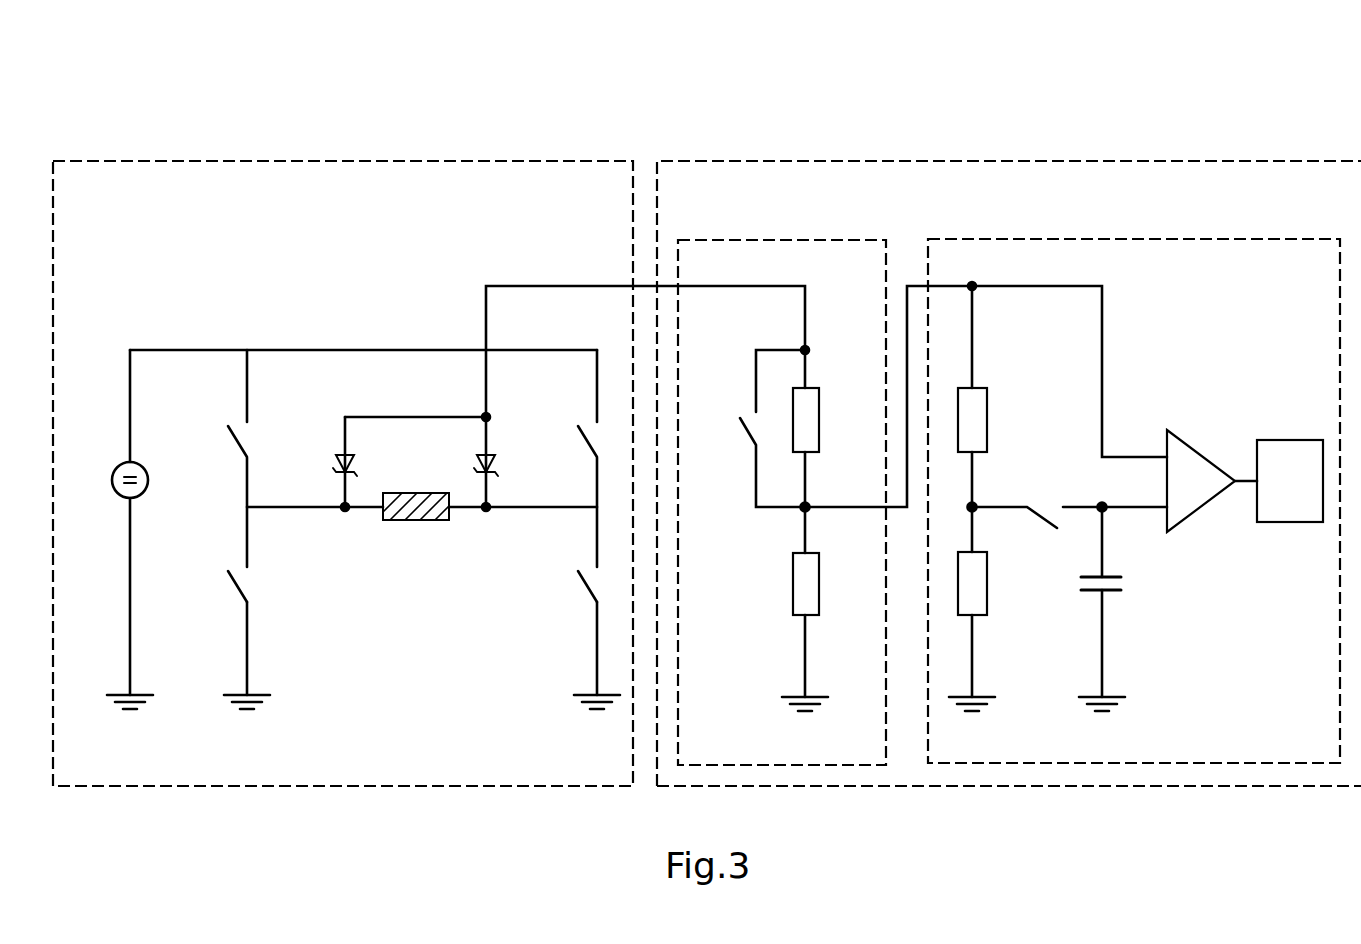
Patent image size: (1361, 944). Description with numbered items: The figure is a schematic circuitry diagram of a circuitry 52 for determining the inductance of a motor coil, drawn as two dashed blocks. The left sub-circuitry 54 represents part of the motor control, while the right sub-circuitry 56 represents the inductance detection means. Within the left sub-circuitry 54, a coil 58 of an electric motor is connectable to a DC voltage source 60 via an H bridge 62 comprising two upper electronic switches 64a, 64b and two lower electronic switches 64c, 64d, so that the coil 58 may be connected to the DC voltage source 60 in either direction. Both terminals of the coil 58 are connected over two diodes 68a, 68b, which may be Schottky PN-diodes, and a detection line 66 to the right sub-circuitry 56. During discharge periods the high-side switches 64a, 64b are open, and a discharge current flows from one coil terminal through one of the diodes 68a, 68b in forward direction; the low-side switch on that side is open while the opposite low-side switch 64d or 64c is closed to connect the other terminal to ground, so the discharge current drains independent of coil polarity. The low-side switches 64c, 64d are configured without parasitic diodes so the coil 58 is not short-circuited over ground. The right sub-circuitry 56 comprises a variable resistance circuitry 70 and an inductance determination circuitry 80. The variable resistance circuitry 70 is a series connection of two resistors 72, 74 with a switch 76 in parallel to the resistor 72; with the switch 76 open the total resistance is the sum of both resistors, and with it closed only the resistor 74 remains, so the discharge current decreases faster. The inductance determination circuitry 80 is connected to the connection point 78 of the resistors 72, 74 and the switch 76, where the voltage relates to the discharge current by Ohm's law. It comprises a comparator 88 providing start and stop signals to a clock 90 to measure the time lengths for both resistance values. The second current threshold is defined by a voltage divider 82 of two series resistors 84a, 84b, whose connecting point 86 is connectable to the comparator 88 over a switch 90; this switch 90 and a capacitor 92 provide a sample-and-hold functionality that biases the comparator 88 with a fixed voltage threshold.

The circuitry 52 is at (176, 129).
The left sub-circuitry 54 is at (312, 160).
The right sub-circuitry 56 is at (1031, 161).
The coil 58 is at (440, 521).
The DC voltage source 60 is at (117, 468).
The H bridge 62 is at (215, 656).
The upper electronic switch 64a is at (238, 444).
The upper electronic switch 64b is at (584, 442).
The lower electronic switch 64c is at (238, 588).
The lower electronic switch 64d is at (584, 588).
The detection line 66 is at (485, 300).
The diode 68a is at (337, 462).
The diode 68b is at (478, 462).
The variable resistance circuitry 70 is at (806, 240).
The resistor 72 is at (820, 397).
The resistor 74 is at (820, 606).
The switch 76 is at (745, 436).
The connection point 78 is at (815, 498).
The inductance determination circuitry 80 is at (1160, 239).
The voltage divider 82 is at (997, 657).
The resistor 84a is at (988, 397).
The resistor 84b is at (988, 606).
The connecting point 86 is at (985, 497).
The comparator 88 is at (1201, 481).
The clock 90 is at (1040, 524).
The capacitor 92 is at (1124, 586).